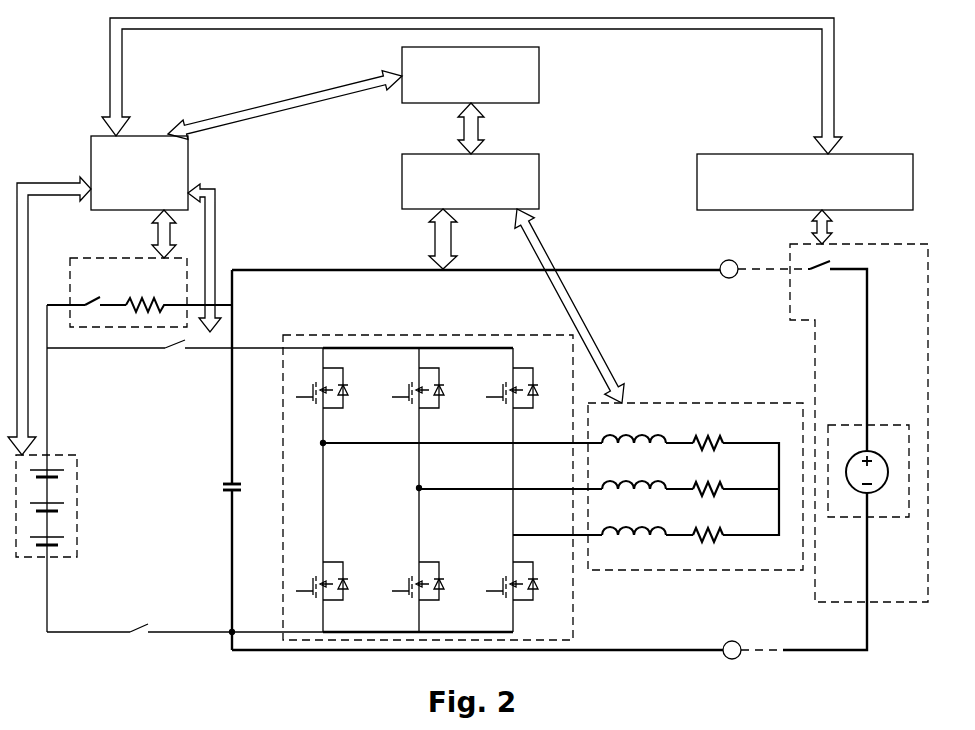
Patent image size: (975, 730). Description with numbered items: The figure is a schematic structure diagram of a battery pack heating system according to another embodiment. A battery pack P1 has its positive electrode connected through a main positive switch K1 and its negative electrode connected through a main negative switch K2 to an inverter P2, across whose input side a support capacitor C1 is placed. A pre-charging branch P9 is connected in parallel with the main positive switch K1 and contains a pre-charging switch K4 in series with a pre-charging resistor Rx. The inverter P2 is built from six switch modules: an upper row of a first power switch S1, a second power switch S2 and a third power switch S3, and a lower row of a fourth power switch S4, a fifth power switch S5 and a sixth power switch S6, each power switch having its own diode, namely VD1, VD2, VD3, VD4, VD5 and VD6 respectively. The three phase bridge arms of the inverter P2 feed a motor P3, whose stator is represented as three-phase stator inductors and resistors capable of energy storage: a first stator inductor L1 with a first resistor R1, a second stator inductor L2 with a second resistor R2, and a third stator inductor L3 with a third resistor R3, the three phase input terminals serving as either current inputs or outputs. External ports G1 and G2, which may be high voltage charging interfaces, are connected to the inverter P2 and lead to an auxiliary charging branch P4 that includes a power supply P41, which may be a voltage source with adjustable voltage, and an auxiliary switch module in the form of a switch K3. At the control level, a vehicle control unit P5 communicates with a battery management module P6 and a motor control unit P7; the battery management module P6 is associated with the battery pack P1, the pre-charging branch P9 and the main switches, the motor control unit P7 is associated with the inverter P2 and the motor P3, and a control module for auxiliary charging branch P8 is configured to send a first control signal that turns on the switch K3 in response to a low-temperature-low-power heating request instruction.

The battery pack P1 is at (67, 455).
The inverter P2 is at (430, 472).
The motor P3 is at (563, 473).
The auxiliary charging branch P4 is at (859, 410).
The power supply P41 is at (875, 426).
The vehicle control unit P5 is at (470, 75).
The battery management module P6 is at (139, 173).
The motor control unit P7 is at (470, 181).
The control module for auxiliary charging branch P8 is at (805, 182).
The pre-charging branch P9 is at (95, 258).
The main positive switch K1 is at (117, 358).
The main negative switch K2 is at (99, 642).
The switch K3 is at (818, 281).
The pre-charging switch K4 is at (86, 288).
The pre-charging resistor Rx is at (179, 292).
The support capacitor C1 is at (222, 486).
The first power switch S1 is at (317, 395).
The second power switch S2 is at (415, 395).
The third power switch S3 is at (507, 395).
The fourth power switch S4 is at (317, 587).
The fifth power switch S5 is at (415, 587).
The sixth power switch S6 is at (507, 587).
The diode VD1 is at (365, 391).
The diode VD2 is at (460, 391).
The diode VD3 is at (553, 391).
The diode VD4 is at (365, 581).
The diode VD5 is at (460, 581).
The diode VD6 is at (553, 581).
The first stator inductor L1 is at (634, 452).
The second stator inductor L2 is at (634, 498).
The third stator inductor L3 is at (634, 544).
The first resistor R1 is at (710, 455).
The second resistor R2 is at (710, 501).
The third resistor R3 is at (710, 547).
The external port G1 is at (763, 283).
The external port G2 is at (752, 638).